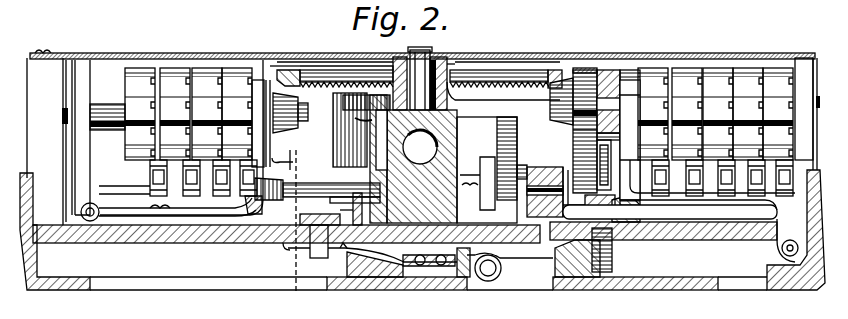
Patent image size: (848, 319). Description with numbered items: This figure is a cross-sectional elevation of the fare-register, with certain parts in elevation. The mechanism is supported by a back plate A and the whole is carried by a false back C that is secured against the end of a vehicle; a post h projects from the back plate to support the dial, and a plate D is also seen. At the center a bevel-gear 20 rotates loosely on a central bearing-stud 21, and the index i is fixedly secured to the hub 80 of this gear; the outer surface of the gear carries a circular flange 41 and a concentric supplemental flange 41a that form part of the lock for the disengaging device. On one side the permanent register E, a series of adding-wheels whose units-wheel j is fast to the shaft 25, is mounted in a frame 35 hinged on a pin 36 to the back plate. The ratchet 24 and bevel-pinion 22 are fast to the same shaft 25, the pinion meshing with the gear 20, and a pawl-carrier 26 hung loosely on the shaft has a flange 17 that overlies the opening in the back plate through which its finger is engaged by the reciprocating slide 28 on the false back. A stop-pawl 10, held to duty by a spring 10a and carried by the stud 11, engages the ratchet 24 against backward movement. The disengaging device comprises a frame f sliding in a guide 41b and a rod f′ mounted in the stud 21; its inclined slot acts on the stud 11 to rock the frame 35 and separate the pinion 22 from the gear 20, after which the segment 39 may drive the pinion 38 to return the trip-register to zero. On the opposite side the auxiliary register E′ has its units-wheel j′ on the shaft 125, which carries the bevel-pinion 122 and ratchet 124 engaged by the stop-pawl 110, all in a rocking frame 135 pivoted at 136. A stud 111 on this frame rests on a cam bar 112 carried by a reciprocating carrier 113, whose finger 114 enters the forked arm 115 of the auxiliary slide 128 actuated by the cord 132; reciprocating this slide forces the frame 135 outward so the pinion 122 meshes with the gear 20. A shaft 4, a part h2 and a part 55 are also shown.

The false back C is at (77, 277).
The back plate A is at (204, 244).
The post h is at (147, 137).
The frame plate D is at (105, 59).
The pivot 136 is at (80, 212).
The rocking frame 135 is at (84, 96).
The shaft 125 is at (110, 130).
The auxiliary permanent register E′ is at (178, 66).
The units-wheel j′ is at (228, 72).
The ratchet 124 is at (262, 90).
The bevel-gear 20 is at (333, 78).
The supplemental circular flange 41a is at (278, 72).
The circular flange 41 is at (320, 66).
The pinion 38 is at (450, 104).
The index i is at (420, 52).
The central bearing-stud 21 is at (445, 66).
The hub 80 is at (452, 64).
The rod f′ is at (420, 147).
The segment 39 is at (361, 130).
The bevel gear h2 is at (330, 100).
The bevel-pinion 122 is at (302, 124).
The shaft 4 is at (296, 305).
The stop-pawl 110 is at (298, 156).
The stud 111 is at (342, 182).
The reciprocating carrier 113 is at (312, 215).
The cam bar 112 is at (362, 208).
The finger 114 is at (318, 258).
The arm 115 is at (343, 252).
The cord 132 is at (450, 254).
The auxiliary reciprocating slide 128 is at (423, 278).
The reciprocating slide 28 is at (539, 259).
The frame f is at (498, 140).
The guide 41b is at (477, 183).
The stud 11 is at (520, 165).
The gear 55 is at (540, 172).
The bevel-pinion 22 is at (550, 102).
The stop-pawl 10 is at (580, 155).
The spring 10a is at (601, 168).
The flange 17 is at (638, 214).
The ratchet 24 is at (580, 70).
The shaft 25 is at (598, 72).
The pawl-carrier 26 is at (608, 72).
The frame 35 is at (630, 72).
The permanent register E is at (688, 66).
The units-wheel j is at (768, 66).
The pin 36 is at (781, 256).